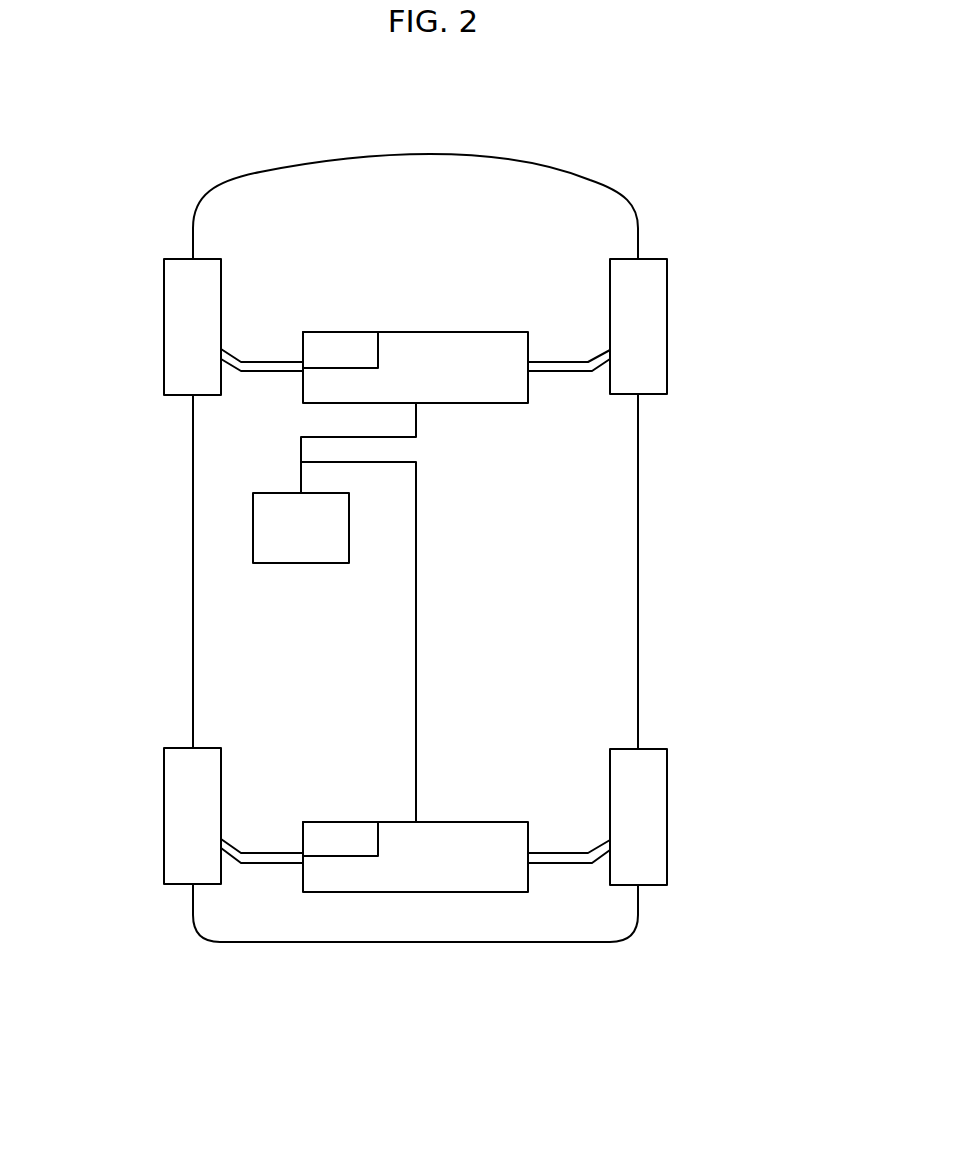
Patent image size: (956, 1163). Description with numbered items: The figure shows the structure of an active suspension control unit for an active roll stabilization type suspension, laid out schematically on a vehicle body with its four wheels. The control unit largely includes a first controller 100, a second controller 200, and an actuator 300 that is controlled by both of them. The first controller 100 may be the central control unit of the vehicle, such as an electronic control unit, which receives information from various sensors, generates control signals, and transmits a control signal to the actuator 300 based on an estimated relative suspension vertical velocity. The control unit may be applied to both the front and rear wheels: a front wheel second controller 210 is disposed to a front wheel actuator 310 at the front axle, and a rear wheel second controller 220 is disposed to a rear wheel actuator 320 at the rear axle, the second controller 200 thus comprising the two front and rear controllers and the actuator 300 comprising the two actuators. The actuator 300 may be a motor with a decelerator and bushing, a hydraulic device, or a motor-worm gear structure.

The first controller 100 is at (272, 527).
The second controller 200 is at (558, 563).
The front wheel second controller 210 is at (341, 345).
The rear wheel second controller 220 is at (339, 845).
The actuator 300 is at (558, 564).
The front wheel actuator 310 is at (480, 357).
The rear wheel actuator 320 is at (463, 860).